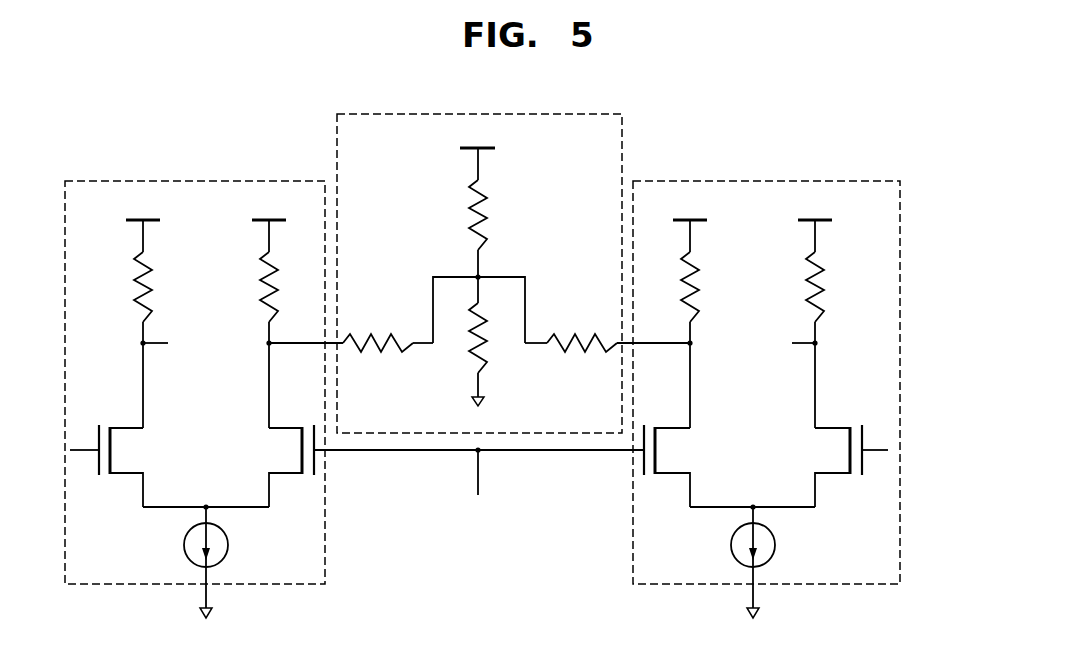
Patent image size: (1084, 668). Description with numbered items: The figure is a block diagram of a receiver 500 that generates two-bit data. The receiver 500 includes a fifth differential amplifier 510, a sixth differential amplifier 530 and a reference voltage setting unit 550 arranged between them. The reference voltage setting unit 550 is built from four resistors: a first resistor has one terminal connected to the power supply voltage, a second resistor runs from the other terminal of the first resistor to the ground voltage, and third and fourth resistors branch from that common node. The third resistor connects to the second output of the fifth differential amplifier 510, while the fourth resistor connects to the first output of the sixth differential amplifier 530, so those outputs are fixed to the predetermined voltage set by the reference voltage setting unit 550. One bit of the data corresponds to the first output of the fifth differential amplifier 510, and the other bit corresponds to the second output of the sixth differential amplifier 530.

The receiver 500 is at (818, 118).
The fifth differential amplifier 510 is at (128, 181).
The sixth differential amplifier 530 is at (668, 181).
The reference voltage setting unit 550 is at (400, 114).